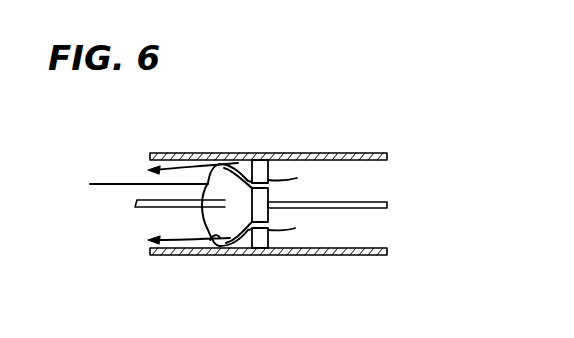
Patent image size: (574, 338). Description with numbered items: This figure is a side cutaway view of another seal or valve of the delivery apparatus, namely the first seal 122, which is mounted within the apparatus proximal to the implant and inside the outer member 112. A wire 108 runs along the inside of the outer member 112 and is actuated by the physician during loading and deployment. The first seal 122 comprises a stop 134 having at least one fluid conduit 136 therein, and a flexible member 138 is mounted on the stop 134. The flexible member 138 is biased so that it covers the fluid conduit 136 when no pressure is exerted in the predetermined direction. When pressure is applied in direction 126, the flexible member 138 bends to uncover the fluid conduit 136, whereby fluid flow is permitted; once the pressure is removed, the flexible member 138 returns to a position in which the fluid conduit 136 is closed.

The wire 108 is at (117, 184).
The outer member 112 is at (365, 154).
The first seal 122 is at (229, 150).
The direction 126 is at (184, 166).
The stop 134 is at (266, 158).
The fluid conduit 136 is at (262, 187).
The flexible member 138 is at (212, 240).